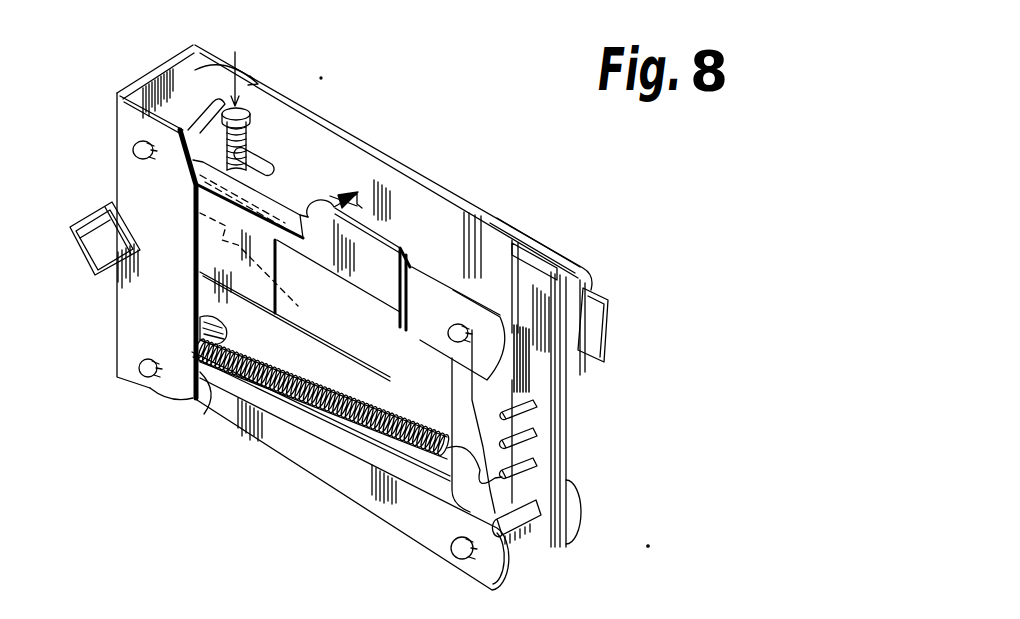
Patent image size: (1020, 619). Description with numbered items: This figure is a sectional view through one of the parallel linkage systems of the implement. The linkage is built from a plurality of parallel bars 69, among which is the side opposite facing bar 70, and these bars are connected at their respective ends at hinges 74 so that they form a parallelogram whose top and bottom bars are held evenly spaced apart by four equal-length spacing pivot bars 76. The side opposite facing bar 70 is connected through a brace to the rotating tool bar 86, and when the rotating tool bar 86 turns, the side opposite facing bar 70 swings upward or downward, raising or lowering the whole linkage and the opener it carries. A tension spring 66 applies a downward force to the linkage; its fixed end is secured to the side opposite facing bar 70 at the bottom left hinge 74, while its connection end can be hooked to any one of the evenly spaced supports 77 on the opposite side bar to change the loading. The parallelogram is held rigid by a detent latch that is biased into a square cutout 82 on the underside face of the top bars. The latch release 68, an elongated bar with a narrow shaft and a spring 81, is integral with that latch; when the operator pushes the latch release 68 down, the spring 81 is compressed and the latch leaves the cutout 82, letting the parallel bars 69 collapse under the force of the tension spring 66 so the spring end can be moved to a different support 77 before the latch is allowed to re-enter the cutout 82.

The tension spring 66 is at (353, 392).
The latch release 68 is at (244, 108).
The parallel bars 69 is at (335, 477).
The side opposite facing bar 70 is at (208, 404).
The hinges 74 is at (140, 148).
The spacing pivot bars 76 is at (197, 100).
The evenly spaced supports 77 is at (535, 432).
The spring 81 is at (252, 152).
The square cutout 82 is at (262, 152).
The rotating tool bar 86 is at (70, 227).